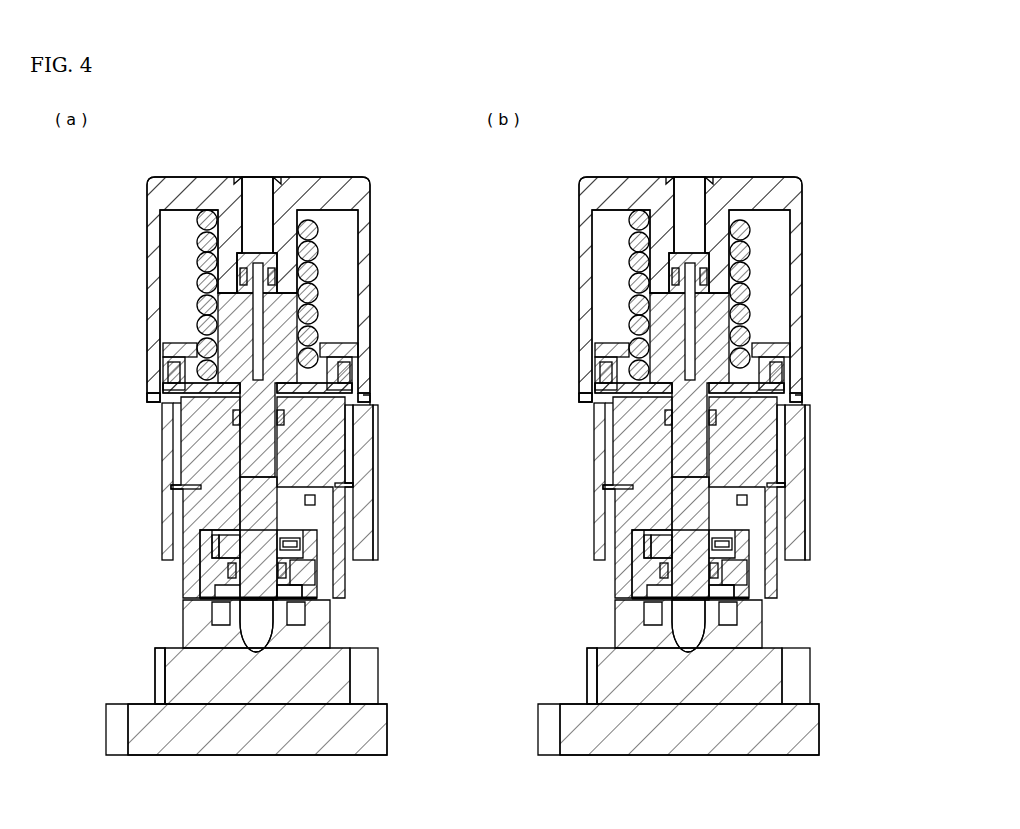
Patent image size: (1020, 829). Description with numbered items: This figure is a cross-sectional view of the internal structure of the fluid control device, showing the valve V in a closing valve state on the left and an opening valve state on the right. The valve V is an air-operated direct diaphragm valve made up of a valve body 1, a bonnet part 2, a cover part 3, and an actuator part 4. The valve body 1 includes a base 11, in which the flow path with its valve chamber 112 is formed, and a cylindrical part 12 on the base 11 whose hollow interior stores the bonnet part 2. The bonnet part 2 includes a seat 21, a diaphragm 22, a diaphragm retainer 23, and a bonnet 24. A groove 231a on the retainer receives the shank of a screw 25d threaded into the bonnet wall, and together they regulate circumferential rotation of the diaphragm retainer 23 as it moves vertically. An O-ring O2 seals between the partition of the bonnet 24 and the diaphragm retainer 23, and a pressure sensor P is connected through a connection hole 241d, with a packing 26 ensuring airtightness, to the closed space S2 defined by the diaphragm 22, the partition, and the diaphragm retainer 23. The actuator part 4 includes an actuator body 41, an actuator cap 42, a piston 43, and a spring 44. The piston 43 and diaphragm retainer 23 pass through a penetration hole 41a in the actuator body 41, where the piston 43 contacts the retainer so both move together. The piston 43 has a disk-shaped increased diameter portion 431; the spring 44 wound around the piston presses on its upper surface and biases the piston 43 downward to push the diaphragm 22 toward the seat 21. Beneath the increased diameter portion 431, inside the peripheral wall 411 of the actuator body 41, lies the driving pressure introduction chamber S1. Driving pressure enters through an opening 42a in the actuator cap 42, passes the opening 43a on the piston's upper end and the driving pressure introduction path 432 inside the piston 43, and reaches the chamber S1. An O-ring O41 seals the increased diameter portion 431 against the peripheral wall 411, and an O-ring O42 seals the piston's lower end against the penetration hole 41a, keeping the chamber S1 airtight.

The valve V is at (388, 171).
The valve body 1 is at (395, 720).
The base 11 is at (388, 740).
The valve chamber 112 is at (170, 650).
The cylindrical part 12 is at (330, 635).
The bonnet part 2 is at (198, 537).
The seat 21 is at (215, 612).
The diaphragm 22 is at (215, 600).
The diaphragm retainer 23 is at (200, 487).
The groove 231a is at (313, 500).
The bonnet 24 is at (215, 560).
The connection hole 241d is at (307, 586).
The screw 25d is at (300, 547).
The packing 26 is at (318, 580).
The cover part 3 is at (383, 490).
The actuator part 4 is at (143, 228).
The actuator body 41 is at (345, 472).
The penetration hole 41a is at (240, 443).
The peripheral wall 411 is at (365, 347).
The actuator cap 42 is at (370, 240).
The opening 42a is at (282, 177).
The piston 43 is at (317, 297).
The opening 43a is at (263, 250).
The increased diameter portion 431 is at (350, 360).
The driving pressure introduction path 432 is at (258, 323).
The spring 44 is at (320, 318).
The O-ring O2 is at (220, 575).
The O-ring O41 is at (350, 373).
The O-ring O42 is at (284, 417).
The pressure sensor P is at (360, 560).
The driving pressure introduction chamber S1 is at (158, 387).
The closed space S2 is at (300, 601).